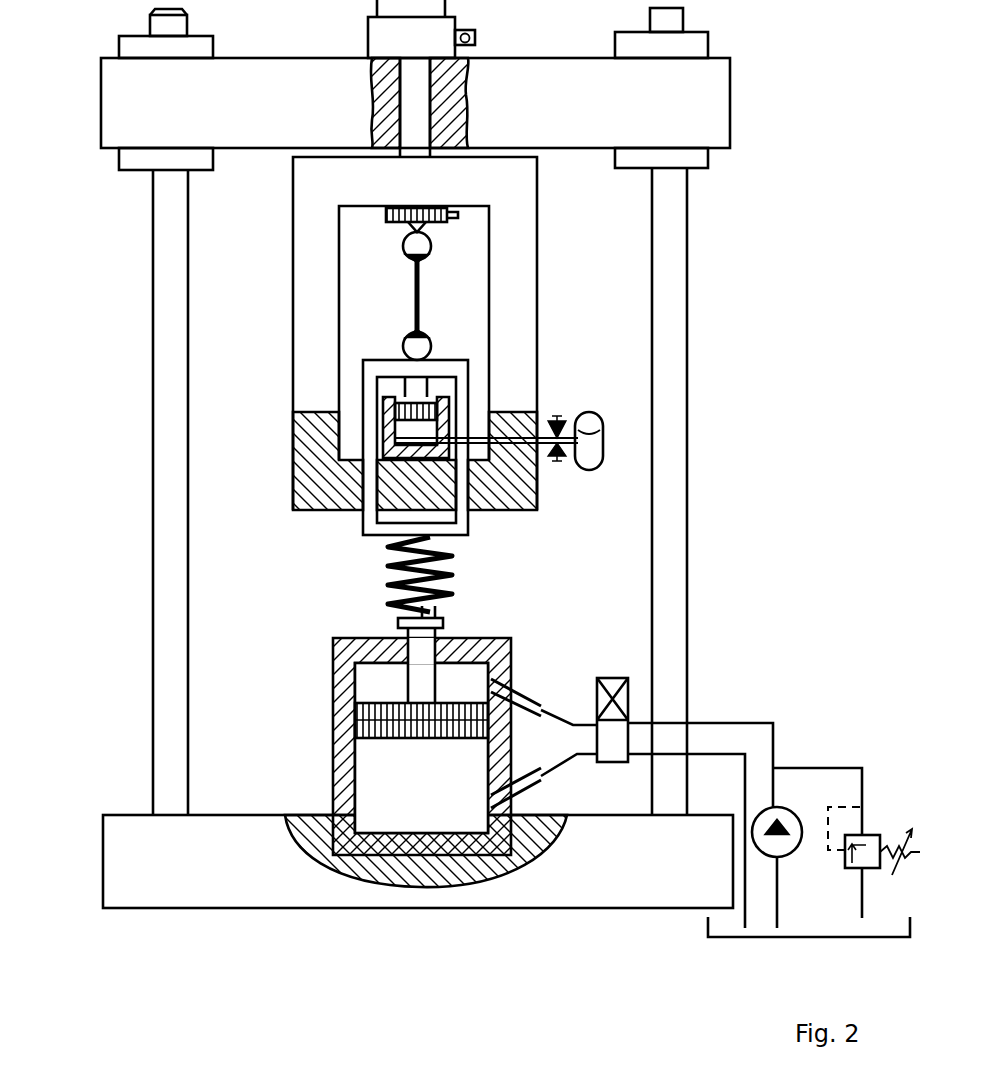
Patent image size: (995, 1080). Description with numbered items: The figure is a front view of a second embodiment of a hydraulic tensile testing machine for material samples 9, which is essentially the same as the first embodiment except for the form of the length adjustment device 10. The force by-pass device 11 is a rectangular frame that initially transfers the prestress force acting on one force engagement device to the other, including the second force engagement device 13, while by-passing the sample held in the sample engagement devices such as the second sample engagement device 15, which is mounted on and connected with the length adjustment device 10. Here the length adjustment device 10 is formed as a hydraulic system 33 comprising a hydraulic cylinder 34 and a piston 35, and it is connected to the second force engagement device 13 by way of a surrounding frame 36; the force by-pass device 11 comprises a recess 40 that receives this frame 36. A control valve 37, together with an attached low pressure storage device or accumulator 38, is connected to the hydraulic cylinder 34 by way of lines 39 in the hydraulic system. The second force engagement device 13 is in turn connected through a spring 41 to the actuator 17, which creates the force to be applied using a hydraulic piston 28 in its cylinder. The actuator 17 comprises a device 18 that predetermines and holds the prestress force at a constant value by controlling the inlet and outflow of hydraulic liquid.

The material sample 9 is at (413, 285).
The length adjustment device 10 is at (475, 515).
The force by-pass device 11 is at (310, 233).
The second force engagement device 13 is at (370, 555).
The second sample engagement device 15 is at (427, 335).
The actuator 17 is at (333, 658).
The device defining prestress force 18 is at (866, 835).
The piston 28 is at (358, 710).
The hydraulic system 33 is at (460, 410).
The hydraulic cylinder 34 is at (445, 412).
The piston 35 is at (427, 404).
The surrounding frame 36 is at (375, 528).
The control valve 37 is at (480, 407).
The low pressure storage device or accumulator 38 is at (590, 450).
The lines 39 is at (540, 476).
The recess 40 is at (380, 500).
The spring 41 is at (390, 580).